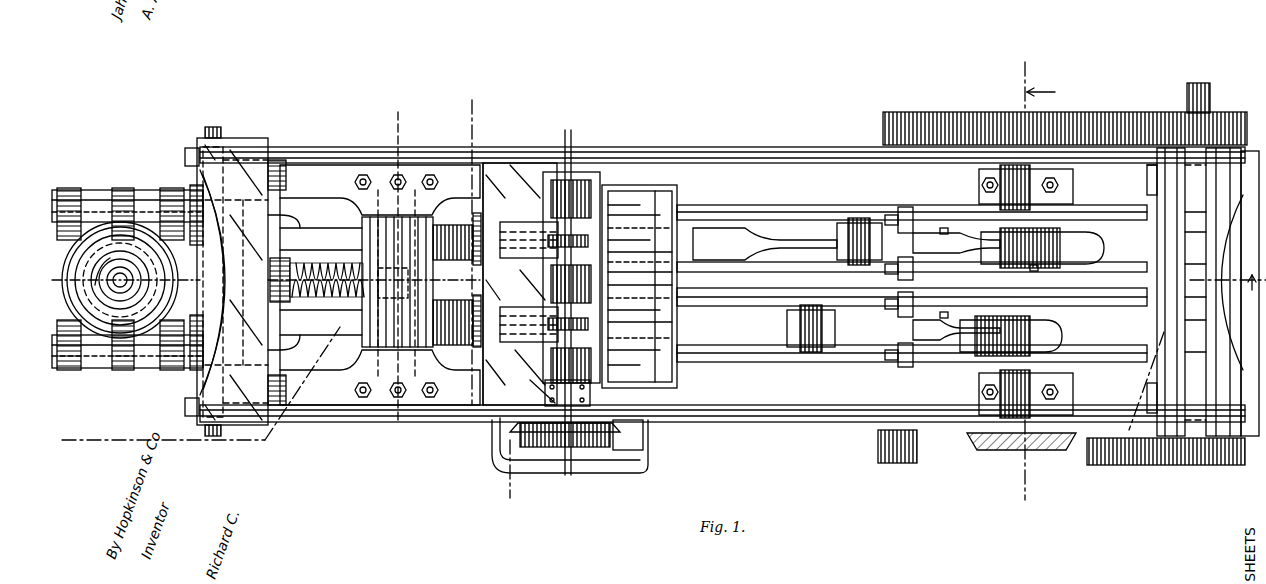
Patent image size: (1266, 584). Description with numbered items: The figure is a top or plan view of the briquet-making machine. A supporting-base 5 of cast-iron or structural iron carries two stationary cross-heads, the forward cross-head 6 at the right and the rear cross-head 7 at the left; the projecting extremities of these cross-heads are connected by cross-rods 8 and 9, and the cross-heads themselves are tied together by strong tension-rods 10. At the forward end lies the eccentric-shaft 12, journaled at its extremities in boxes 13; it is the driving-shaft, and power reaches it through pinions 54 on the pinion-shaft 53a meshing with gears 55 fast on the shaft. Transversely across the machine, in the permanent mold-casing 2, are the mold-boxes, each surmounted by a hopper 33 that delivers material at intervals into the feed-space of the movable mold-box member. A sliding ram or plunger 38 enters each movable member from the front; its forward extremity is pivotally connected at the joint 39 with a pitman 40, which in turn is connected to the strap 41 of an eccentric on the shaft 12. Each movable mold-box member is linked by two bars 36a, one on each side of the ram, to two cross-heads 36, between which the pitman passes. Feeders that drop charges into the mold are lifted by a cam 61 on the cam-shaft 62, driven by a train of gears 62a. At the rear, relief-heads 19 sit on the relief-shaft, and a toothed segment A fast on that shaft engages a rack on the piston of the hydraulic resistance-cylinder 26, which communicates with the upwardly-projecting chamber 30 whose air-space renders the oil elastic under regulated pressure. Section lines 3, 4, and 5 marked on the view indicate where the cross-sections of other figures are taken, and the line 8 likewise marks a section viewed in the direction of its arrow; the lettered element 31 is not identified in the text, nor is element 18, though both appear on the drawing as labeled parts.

The permanent mold-casing 2 is at (520, 284).
The section line 3 3 is at (1228, 290).
The section line 4 4 is at (1138, 325).
The supporting-base 5 is at (932, 281).
The cross-head 6 is at (1105, 484).
The cross-head 7 is at (232, 281).
The cross-rod 8 is at (1240, 262).
The cross-rod 9 is at (186, 170).
The tension-rods 10 is at (782, 147).
The eccentric-shaft 12 is at (1075, 212).
The boxes 13 is at (975, 112).
The motor support block 18 is at (320, 170).
The relief-heads 19 is at (362, 244).
The hydraulic resistance-cylinder 26 is at (127, 288).
The upwardly-projecting chamber 30 is at (120, 280).
The wheel hub 31 is at (101, 262).
The hopper 33 is at (635, 182).
The cross-heads 36 is at (905, 210).
The bars 36a is at (850, 200).
The sliding ram or plunger 38 is at (700, 230).
The joint 39 is at (858, 222).
The pitman 40 is at (952, 286).
The strap 41 is at (1104, 248).
The pinion-shaft 53a is at (1200, 82).
The pinions 54 is at (1232, 112).
The gears 55 is at (1070, 112).
The cam 61 is at (545, 318).
The cam-shaft 62 is at (568, 170).
The train of gears 62a is at (608, 450).
The toothed segment A is at (446, 292).